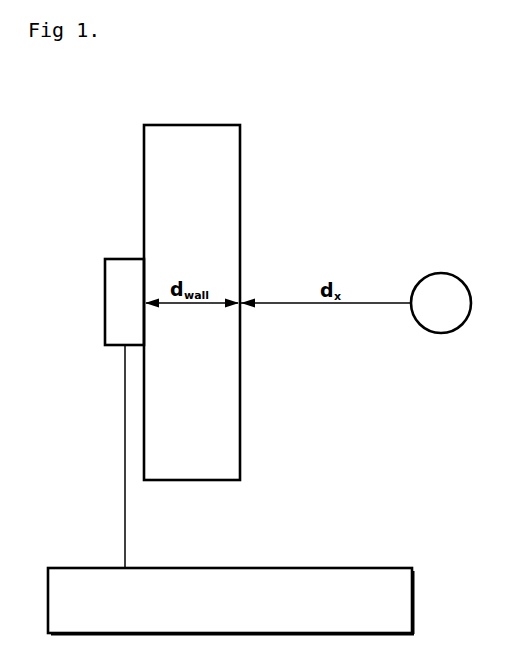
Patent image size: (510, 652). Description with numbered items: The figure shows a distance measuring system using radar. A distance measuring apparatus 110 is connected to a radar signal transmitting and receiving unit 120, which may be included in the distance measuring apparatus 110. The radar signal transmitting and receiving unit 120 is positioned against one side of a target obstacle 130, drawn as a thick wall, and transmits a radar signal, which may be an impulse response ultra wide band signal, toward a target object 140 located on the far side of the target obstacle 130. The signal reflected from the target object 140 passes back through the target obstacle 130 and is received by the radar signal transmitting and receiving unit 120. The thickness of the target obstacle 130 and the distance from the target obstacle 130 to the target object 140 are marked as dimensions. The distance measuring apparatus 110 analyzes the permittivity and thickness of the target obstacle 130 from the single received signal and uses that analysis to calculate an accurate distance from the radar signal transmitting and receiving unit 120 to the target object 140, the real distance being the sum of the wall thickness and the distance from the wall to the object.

The distance measuring apparatus 110 is at (78, 568).
The radar signal transmitting and receiving unit 120 is at (118, 259).
The target obstacle 130 is at (192, 125).
The target object 140 is at (441, 272).